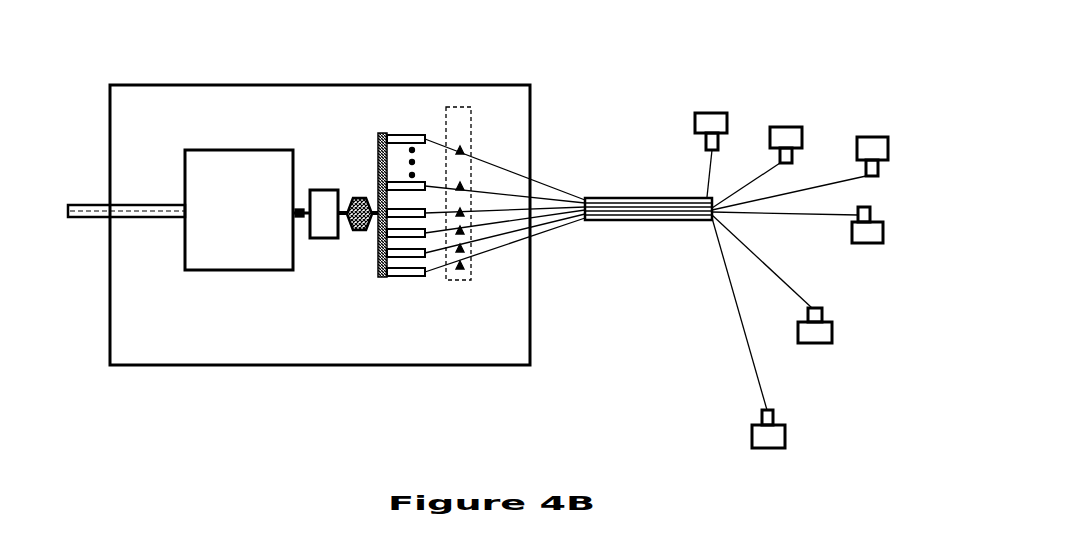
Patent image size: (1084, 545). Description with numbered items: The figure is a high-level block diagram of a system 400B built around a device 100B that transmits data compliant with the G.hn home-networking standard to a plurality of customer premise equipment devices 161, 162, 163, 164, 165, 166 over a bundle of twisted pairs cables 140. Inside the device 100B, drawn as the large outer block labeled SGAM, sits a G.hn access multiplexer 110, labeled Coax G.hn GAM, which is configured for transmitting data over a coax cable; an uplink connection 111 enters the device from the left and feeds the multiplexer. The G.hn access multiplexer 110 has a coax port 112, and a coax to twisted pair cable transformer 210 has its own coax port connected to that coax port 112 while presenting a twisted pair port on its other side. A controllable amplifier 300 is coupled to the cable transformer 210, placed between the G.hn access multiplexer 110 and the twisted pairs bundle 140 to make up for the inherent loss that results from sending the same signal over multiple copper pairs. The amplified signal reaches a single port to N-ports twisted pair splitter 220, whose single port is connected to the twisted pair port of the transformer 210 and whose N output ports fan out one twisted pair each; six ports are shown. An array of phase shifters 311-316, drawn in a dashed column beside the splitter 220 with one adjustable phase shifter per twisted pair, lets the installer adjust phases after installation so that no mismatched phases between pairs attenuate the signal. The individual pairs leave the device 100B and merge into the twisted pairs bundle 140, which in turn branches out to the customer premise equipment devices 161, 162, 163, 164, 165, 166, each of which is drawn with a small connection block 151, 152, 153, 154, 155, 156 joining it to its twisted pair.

The device 100B is at (245, 85).
The G.hn access multiplexer (GAM) 110 is at (230, 150).
The uplink coax cable 111 is at (140, 205).
The coax port 112 is at (302, 208).
The coax to twisted pair cable transformer 210 is at (320, 240).
The controllable amplifier 300 is at (360, 198).
The single port to N-ports twisted pair splitter 220 is at (378, 163).
The array of phase shifters 311-316 is at (465, 108).
The bundle of twisted pairs cables 140 is at (640, 198).
The coax end point 151 is at (706, 140).
The coax end point 152 is at (793, 158).
The coax end point 153 is at (880, 172).
The coax end point 154 is at (872, 208).
The coax end point 155 is at (822, 314).
The coax end point 156 is at (773, 414).
The customer premise equipment (CPE) device 161 is at (700, 112).
The customer premise equipment (CPE) device 162 is at (802, 133).
The customer premise equipment (CPE) device 163 is at (870, 140).
The customer premise equipment (CPE) device 164 is at (884, 230).
The customer premise equipment (CPE) device 165 is at (832, 332).
The customer premise equipment (CPE) device 166 is at (785, 432).
The system 400B is at (667, 370).